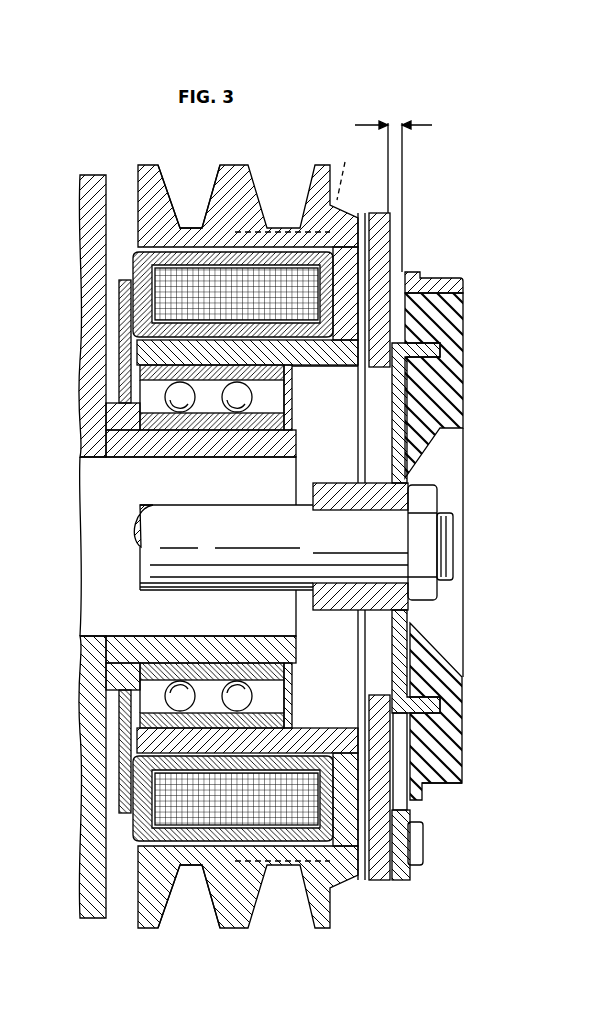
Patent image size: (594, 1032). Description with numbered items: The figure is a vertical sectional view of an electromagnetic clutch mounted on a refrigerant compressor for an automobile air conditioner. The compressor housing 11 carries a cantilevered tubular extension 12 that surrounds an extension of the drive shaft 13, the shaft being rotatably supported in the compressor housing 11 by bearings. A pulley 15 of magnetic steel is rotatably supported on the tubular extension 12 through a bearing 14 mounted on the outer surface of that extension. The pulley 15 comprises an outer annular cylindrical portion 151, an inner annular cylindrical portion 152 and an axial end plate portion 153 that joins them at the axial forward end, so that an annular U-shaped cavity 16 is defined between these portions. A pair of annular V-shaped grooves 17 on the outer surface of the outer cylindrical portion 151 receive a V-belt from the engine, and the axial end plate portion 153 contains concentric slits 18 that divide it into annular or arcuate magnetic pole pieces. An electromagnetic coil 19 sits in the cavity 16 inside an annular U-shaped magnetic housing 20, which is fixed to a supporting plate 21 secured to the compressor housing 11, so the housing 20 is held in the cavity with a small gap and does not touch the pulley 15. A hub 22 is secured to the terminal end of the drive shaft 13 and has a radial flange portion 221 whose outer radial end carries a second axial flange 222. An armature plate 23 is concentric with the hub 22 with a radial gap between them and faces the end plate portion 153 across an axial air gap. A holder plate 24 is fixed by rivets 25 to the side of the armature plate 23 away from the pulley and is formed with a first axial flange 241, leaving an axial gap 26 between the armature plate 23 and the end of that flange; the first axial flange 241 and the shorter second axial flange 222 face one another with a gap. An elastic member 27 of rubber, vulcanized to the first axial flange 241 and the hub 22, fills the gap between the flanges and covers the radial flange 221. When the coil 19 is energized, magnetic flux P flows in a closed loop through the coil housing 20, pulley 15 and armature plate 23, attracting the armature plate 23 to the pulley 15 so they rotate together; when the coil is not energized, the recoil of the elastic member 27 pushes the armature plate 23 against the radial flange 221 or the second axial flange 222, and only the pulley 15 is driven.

The compressor housing 11 is at (92, 173).
The tubular extension 12 is at (200, 660).
The drive shaft 13 is at (345, 575).
The bearing 14 is at (165, 672).
The pulley 15 is at (236, 172).
The outer annular cylindrical portion 151 is at (268, 232).
The inner annular cylindrical portion 152 is at (165, 353).
The axial end plate portion 153 is at (366, 250).
The annular U-shaped cavity 16 is at (330, 366).
The annular V-shaped grooves 17 is at (184, 210).
The concentric slits 18 is at (343, 250).
The electromagnetic coil 19 is at (147, 275).
The magnetic housing 20 is at (150, 290).
The supporting plate 21 is at (128, 340).
The hub 22 is at (345, 496).
The radial flange portion 221 is at (412, 435).
The second axial flange 222 is at (448, 330).
The armature plate 23 is at (385, 264).
The holder plate 24 is at (396, 881).
The first axial flange 241 is at (453, 784).
The rivets 25 is at (425, 842).
The axial gap 26 is at (402, 118).
The elastic member 27 is at (453, 392).
The magnetic flux P is at (342, 171).